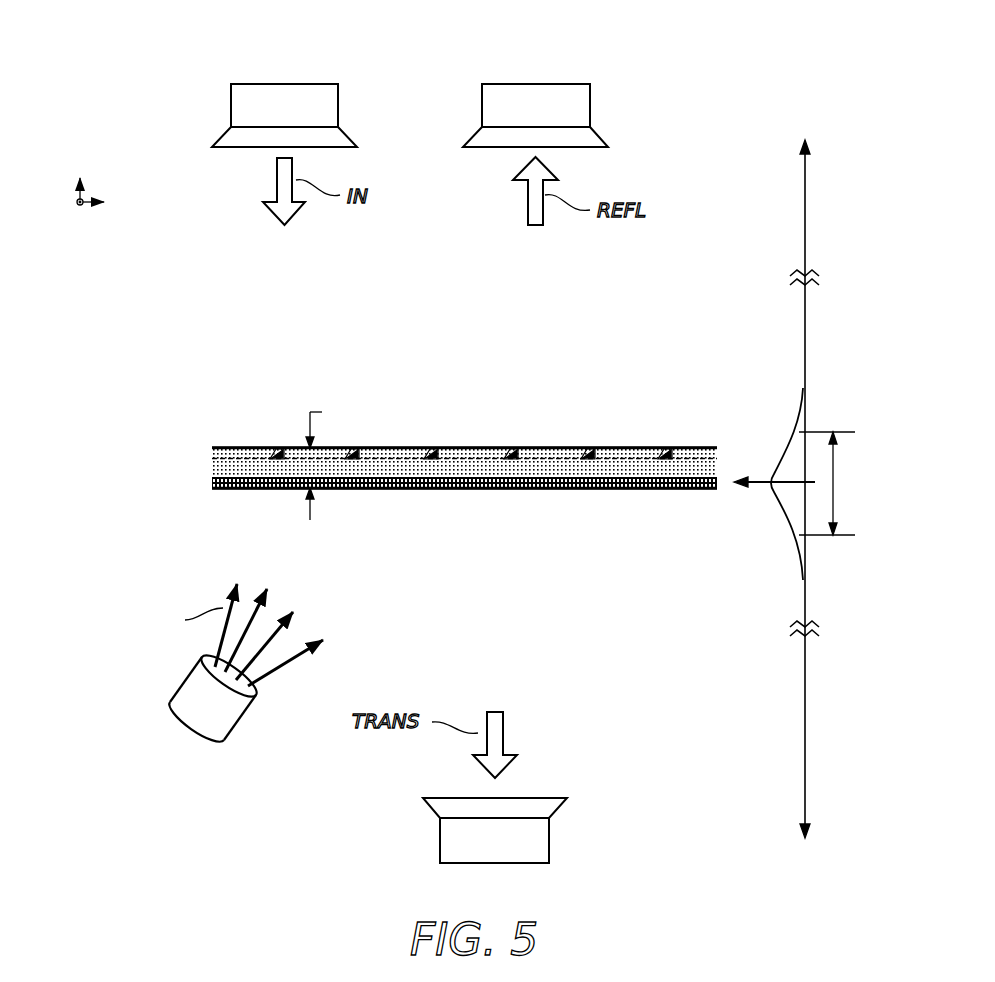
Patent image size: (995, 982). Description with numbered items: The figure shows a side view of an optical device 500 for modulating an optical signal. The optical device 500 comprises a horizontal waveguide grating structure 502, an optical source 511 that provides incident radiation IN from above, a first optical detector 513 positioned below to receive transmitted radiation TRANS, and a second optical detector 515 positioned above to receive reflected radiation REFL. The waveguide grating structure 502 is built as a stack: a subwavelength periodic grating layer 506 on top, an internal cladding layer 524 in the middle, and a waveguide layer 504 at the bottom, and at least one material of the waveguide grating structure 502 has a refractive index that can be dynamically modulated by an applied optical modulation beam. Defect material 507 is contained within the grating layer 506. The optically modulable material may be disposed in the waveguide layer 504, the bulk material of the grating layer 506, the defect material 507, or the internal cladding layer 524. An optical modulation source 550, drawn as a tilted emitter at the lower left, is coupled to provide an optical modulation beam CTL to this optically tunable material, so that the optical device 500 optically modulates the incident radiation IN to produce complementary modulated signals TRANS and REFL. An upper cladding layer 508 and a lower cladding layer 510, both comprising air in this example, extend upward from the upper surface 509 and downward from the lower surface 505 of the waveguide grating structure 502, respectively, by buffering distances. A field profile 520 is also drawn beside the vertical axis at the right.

The optical device 500 is at (142, 53).
The horizontal waveguide grating structure 502 is at (113, 428).
The waveguide layer 504 is at (212, 483).
The lower surface 505 is at (240, 488).
The subwavelength periodic grating layer 506 is at (212, 452).
The defect material 507 is at (666, 449).
The upper cladding layer 508 is at (450, 353).
The upper surface 509 is at (243, 448).
The lower cladding layer 510 is at (450, 586).
The optical source 511 is at (338, 100).
The first optical detector 513 is at (437, 835).
The second optical detector 515 is at (590, 100).
The leaky mode field profile 520 is at (783, 443).
The internal cladding layer 524 is at (212, 467).
The optical modulation source 550 is at (188, 688).